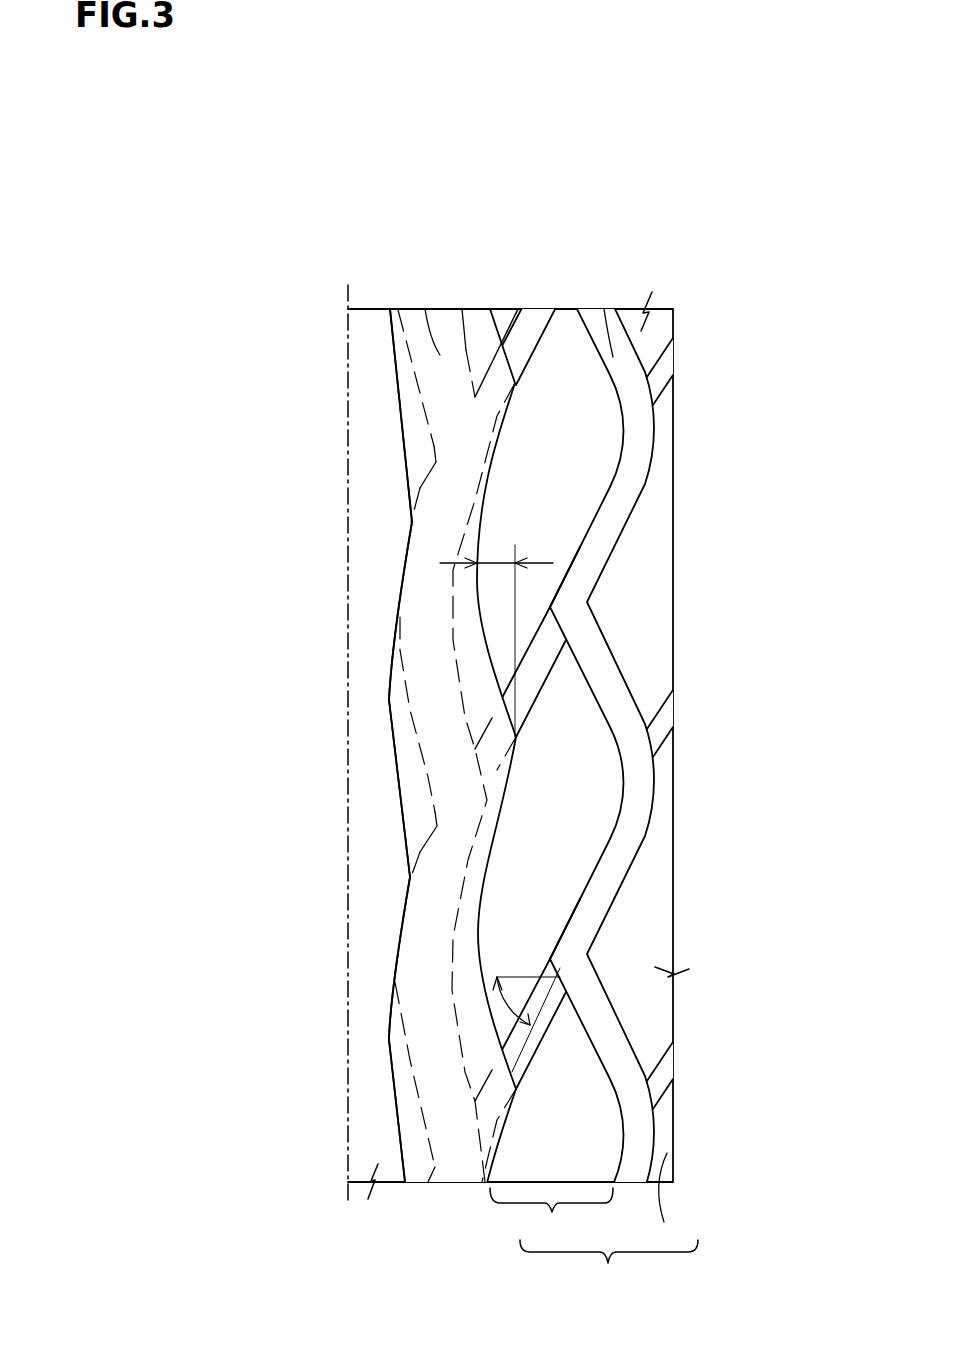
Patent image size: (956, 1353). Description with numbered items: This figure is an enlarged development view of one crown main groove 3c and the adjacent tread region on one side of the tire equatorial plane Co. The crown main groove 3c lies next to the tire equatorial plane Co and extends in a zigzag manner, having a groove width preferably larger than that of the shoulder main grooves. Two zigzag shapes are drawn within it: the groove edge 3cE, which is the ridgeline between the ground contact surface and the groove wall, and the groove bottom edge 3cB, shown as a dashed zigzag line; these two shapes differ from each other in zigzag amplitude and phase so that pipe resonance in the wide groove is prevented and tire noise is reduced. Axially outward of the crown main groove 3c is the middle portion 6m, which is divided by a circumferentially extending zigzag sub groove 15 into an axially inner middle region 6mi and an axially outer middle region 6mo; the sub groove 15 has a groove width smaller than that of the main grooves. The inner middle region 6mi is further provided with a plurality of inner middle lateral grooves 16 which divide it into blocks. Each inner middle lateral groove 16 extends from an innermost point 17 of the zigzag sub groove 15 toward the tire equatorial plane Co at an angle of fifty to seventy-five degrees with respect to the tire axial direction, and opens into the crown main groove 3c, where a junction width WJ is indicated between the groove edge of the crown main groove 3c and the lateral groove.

The crown main groove 3c is at (425, 309).
The groove edge 3cE is at (398, 405).
The groove bottom edge 3cB is at (432, 445).
The sub groove 15 is at (604, 309).
The inner middle lateral groove 16 is at (550, 670).
The innermost point 17 is at (541, 592).
The tire equatorial plane Co is at (349, 729).
The junction width WJ is at (496, 632).
The inner middle region 6mi is at (551, 1220).
The outer middle region 6mo is at (663, 1203).
The middle portion 6m is at (609, 1270).